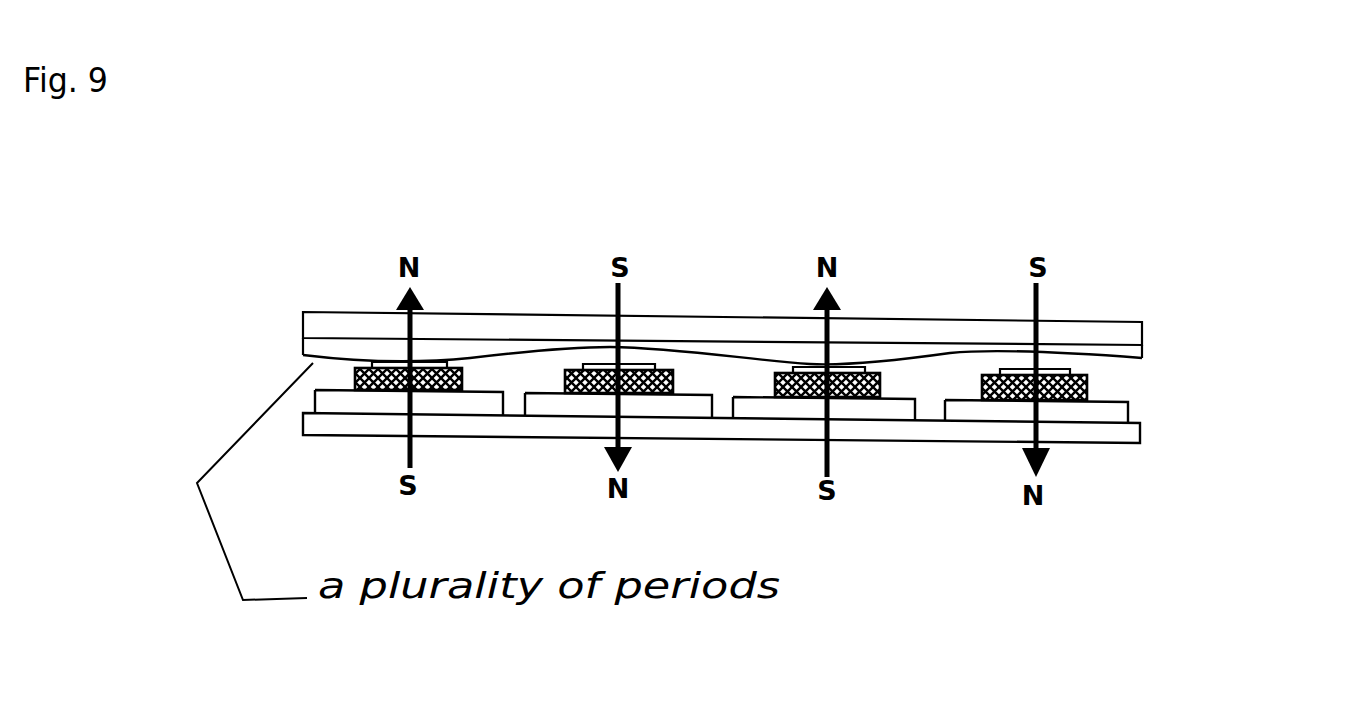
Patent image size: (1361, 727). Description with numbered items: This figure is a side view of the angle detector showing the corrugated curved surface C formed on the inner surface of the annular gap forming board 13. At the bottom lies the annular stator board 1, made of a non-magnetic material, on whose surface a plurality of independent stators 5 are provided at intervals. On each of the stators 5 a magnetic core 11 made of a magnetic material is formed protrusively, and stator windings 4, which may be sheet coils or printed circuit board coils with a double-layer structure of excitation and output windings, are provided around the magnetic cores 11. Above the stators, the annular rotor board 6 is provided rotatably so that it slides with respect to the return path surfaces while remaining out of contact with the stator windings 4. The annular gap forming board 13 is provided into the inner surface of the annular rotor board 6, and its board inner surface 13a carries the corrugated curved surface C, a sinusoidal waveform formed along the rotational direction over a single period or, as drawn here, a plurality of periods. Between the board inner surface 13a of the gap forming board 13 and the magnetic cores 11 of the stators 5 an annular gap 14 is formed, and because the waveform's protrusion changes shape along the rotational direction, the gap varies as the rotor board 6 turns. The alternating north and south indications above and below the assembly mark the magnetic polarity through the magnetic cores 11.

The annular stator board 1 is at (1108, 433).
The stator windings 4 is at (1095, 388).
The stators 5 is at (1118, 410).
The annular rotor board 6 is at (1103, 337).
The magnetic cores 11 is at (650, 365).
The annular gap forming board 13 is at (303, 346).
The board inner surface 13a is at (322, 357).
The annular gap 14 is at (353, 360).
The corrugated curved surface C is at (452, 348).